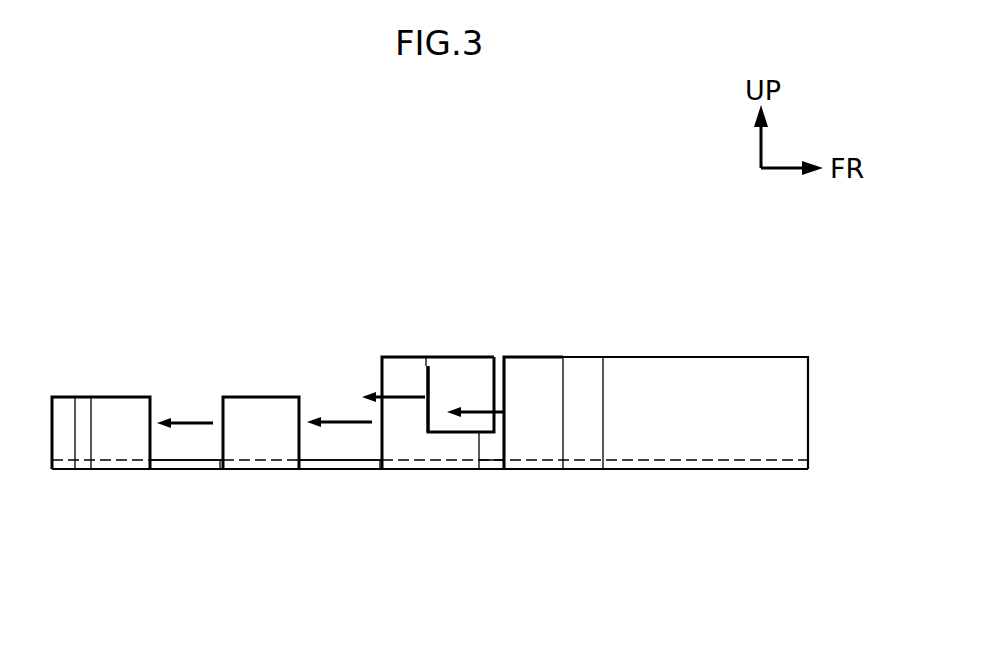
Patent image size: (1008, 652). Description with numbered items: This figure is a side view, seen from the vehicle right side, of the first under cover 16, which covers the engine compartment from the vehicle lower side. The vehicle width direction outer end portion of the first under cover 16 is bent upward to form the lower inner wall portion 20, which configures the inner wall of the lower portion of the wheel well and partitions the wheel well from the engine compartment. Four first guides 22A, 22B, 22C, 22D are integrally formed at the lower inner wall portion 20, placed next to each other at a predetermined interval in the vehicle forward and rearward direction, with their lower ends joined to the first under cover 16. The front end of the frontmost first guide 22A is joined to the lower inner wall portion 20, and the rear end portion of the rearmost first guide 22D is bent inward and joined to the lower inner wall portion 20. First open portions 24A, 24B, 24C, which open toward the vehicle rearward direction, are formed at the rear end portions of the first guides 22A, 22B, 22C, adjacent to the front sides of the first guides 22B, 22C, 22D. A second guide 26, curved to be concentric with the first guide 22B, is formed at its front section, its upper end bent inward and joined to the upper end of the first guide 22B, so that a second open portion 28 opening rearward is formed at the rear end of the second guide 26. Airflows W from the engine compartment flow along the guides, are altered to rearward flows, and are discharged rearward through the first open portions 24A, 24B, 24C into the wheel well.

The first under cover 16 is at (680, 470).
The lower inner wall portion 20 is at (684, 382).
The first guide 22A is at (537, 372).
The first guide 22B is at (398, 372).
The first guide 22C is at (255, 417).
The first guide 22D is at (118, 417).
The first open portion 24A is at (493, 445).
The first open portion 24B is at (338, 443).
The first open portion 24C is at (187, 437).
The second guide 26 is at (463, 375).
The second open portion 28 is at (425, 420).
The airflow W is at (192, 421).